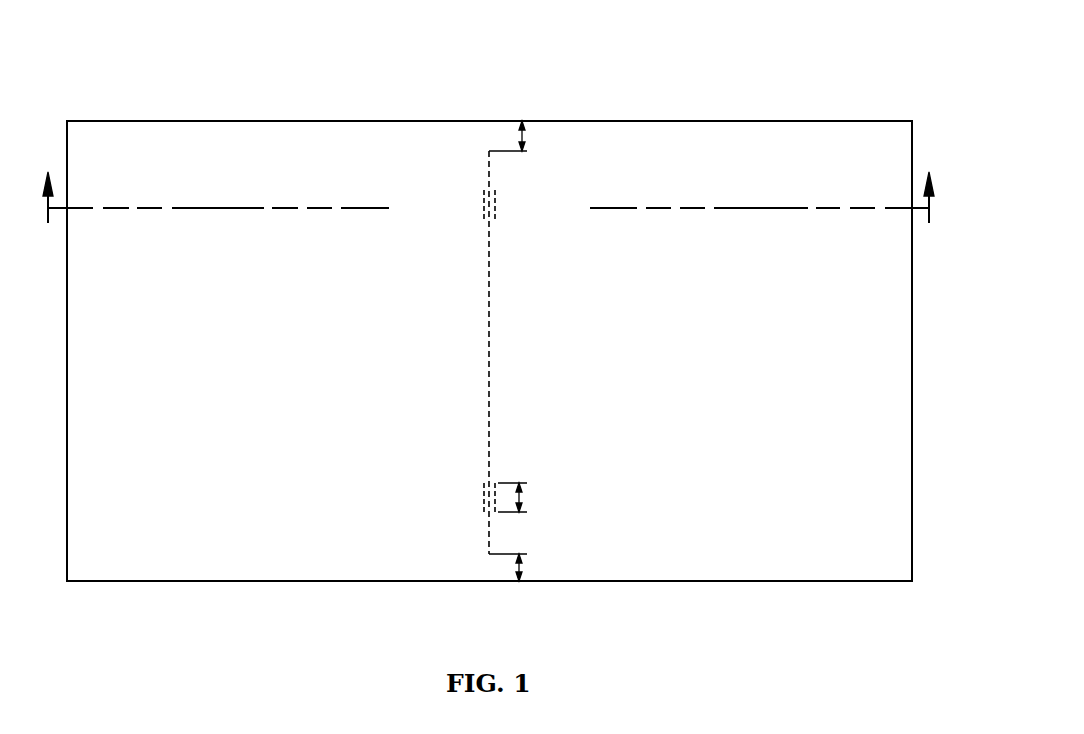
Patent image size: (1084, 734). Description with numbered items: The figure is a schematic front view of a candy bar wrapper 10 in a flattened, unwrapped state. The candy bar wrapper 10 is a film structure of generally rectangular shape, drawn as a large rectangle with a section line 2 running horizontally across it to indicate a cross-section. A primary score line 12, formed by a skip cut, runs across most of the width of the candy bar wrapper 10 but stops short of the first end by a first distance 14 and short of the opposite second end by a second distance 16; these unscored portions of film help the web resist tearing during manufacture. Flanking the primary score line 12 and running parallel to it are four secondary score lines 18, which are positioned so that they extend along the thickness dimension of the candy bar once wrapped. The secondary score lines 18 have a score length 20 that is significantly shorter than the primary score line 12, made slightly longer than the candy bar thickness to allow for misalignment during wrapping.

The candy bar wrapper 10 is at (707, 84).
The section line 2- 2 is at (491, 193).
The primary score line 12 is at (489, 172).
The first distance 14 is at (526, 135).
The second distance 16 is at (523, 568).
The secondary score lines 18 is at (484, 206).
The score length 20 is at (524, 497).